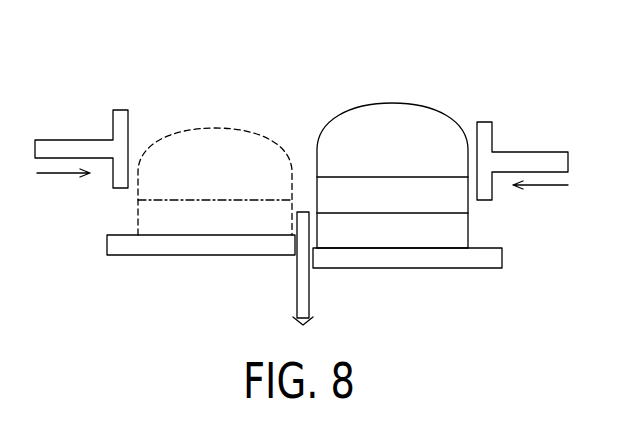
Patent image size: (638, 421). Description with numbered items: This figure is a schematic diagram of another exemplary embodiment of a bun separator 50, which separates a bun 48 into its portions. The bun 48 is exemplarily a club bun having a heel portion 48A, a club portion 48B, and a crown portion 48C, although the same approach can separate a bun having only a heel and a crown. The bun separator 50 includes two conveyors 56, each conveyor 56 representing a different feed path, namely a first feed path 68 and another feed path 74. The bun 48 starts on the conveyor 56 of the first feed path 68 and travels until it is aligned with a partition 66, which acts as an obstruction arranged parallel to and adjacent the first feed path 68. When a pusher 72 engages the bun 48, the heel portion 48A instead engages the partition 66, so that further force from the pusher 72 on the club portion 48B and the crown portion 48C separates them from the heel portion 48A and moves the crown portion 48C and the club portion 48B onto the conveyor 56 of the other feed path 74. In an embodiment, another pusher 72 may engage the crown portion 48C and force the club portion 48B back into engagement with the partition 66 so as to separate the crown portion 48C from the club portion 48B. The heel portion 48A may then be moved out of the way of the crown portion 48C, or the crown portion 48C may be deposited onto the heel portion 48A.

The bun separator 50 is at (425, 53).
The bun 48 is at (373, 108).
The heel portion 48A is at (453, 228).
The club portion 48B is at (163, 213).
The crown portion 48C is at (213, 160).
The conveyor 56 is at (125, 245).
The partition 66 is at (303, 217).
The first feed path 68 is at (422, 307).
The pusher 72 is at (85, 150).
The other feed path 74 is at (223, 293).